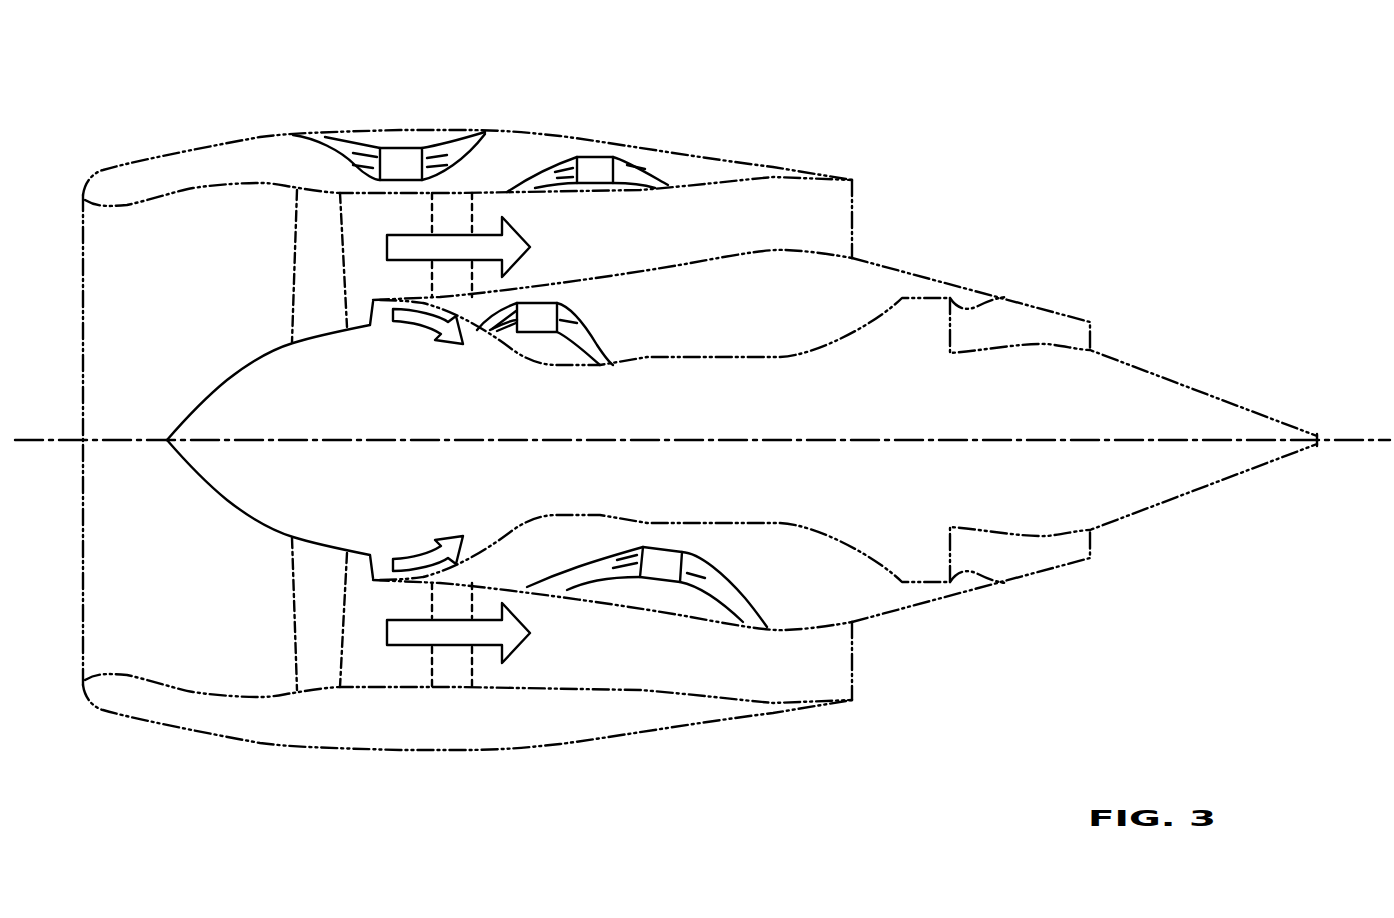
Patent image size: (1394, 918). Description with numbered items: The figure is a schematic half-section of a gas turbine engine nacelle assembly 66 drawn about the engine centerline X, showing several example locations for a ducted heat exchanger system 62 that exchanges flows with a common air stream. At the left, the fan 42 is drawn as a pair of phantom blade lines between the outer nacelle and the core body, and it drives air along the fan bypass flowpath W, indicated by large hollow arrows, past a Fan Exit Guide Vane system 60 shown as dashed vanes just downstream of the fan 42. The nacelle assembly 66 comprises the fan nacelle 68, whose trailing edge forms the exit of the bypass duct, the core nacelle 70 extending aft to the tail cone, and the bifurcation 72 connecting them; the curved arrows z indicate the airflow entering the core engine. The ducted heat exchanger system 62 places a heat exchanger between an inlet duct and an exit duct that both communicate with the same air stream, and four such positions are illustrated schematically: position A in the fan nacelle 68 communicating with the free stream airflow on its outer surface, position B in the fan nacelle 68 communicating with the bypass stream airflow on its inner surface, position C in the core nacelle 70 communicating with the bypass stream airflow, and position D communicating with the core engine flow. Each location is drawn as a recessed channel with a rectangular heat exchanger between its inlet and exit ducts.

The fan 42 is at (325, 277).
The Fan Exit Guide Vane system 60 is at (447, 210).
The ducted heat exchanger system 62 is at (530, 110).
The nacelle assembly 66 is at (1021, 189).
The fan nacelle 68 is at (858, 150).
The core nacelle 70 is at (1102, 292).
The bifurcation 72 is at (713, 677).
The position A is at (392, 105).
The position B is at (657, 160).
The position C is at (720, 552).
The position D is at (607, 315).
The fan bypass flowpath W is at (512, 642).
The engine centerline axis X is at (1338, 440).
The core airflow z is at (417, 323).